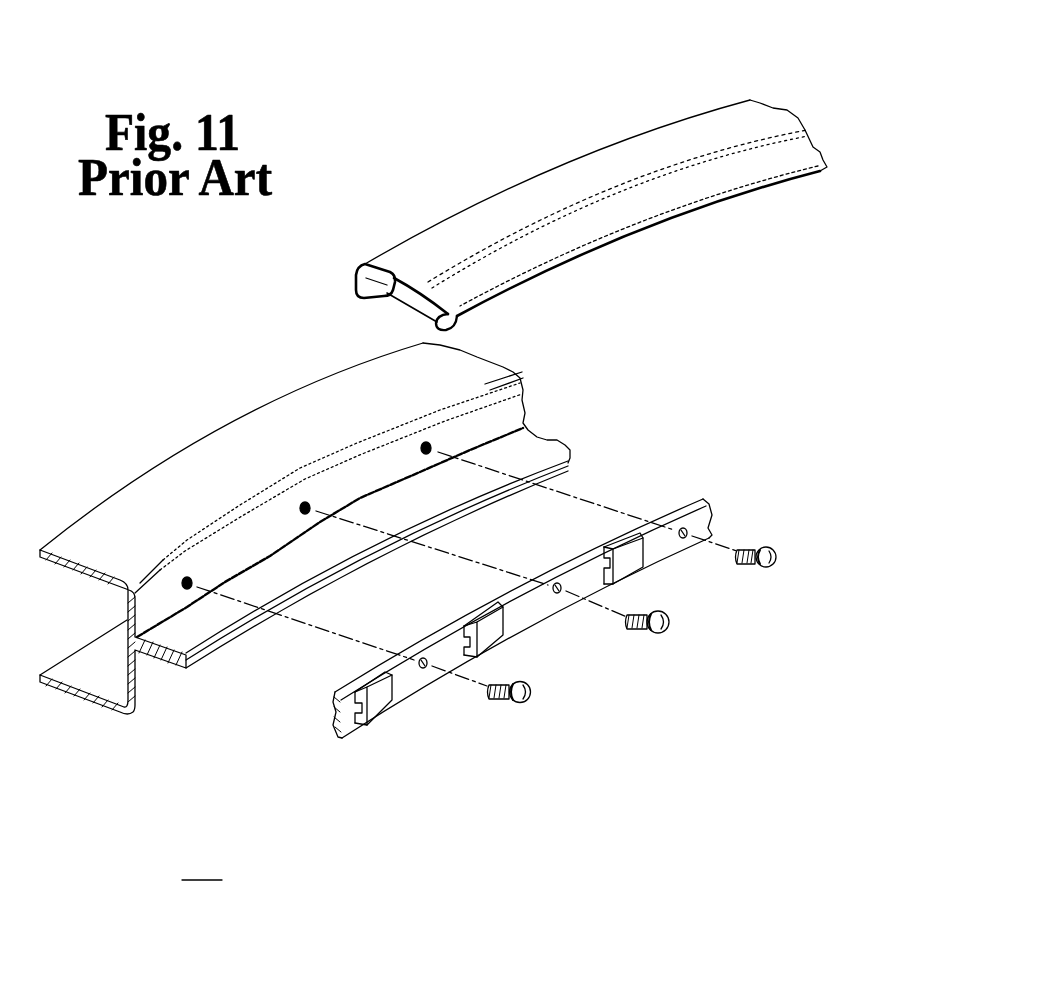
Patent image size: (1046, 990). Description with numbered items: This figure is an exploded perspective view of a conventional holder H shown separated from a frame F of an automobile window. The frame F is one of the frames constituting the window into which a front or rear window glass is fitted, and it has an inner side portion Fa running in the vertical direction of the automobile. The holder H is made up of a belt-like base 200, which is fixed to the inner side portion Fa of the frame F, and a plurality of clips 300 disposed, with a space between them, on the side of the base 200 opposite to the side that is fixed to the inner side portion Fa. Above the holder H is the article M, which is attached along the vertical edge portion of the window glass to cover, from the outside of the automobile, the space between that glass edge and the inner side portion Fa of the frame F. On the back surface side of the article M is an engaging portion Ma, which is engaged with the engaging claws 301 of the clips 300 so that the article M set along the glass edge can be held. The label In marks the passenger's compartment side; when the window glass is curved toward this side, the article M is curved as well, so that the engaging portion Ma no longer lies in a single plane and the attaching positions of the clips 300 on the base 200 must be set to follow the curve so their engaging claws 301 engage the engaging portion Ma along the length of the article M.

The article M is at (568, 172).
The engaging portion Ma is at (377, 302).
The frame F is at (305, 483).
The inner side portion Fa is at (243, 553).
The base 200 is at (564, 599).
The holder H is at (700, 514).
The clips 300 is at (572, 606).
The engaging claws 301 is at (468, 612).
The passenger's compartment side In is at (202, 864).